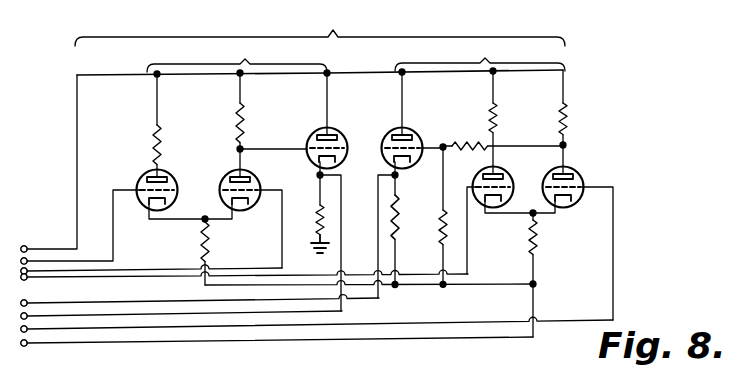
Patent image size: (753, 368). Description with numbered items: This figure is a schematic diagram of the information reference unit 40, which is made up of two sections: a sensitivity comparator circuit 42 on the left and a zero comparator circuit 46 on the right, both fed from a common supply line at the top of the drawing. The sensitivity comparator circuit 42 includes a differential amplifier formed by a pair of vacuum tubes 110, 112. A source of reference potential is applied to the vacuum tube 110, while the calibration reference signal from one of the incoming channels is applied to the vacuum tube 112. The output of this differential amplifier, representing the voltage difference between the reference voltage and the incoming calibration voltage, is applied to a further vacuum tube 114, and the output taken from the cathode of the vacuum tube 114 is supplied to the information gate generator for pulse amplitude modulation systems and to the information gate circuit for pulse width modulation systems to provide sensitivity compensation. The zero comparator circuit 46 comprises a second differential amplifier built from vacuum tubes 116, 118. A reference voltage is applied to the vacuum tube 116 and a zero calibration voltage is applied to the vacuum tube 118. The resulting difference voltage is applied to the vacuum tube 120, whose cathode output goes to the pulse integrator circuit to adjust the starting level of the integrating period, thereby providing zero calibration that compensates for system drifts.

The information reference unit 40 is at (320, 43).
The sensitivity comparator circuit 42 is at (237, 57).
The zero comparator circuit 46 is at (480, 56).
The vacuum tube 110 is at (151, 176).
The vacuum tube 112 is at (253, 176).
The vacuum tube 114 is at (324, 127).
The vacuum tube 116 is at (505, 171).
The vacuum tube 118 is at (576, 171).
The vacuum tube 120 is at (411, 130).